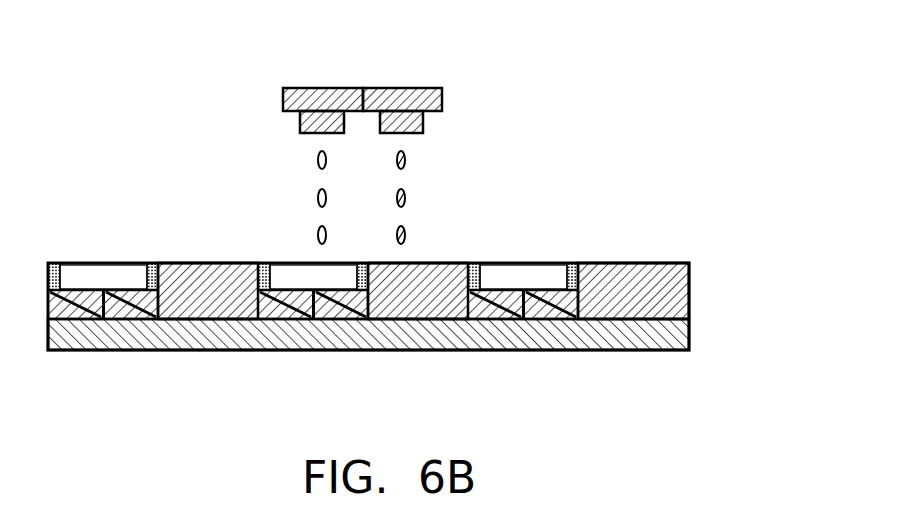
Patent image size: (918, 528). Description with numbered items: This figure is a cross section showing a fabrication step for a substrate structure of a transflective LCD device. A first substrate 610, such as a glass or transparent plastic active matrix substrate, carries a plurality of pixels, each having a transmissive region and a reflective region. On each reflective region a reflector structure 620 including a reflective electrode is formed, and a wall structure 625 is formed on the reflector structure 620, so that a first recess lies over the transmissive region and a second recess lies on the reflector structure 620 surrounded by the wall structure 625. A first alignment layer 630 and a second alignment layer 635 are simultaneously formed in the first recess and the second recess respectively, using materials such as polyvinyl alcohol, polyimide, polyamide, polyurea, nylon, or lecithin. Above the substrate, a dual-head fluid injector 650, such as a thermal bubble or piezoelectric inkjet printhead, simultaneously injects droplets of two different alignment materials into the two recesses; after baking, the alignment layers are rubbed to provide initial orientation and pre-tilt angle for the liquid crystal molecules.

The first substrate 610 is at (689, 333).
The reflector structure 620 is at (132, 308).
The wall structure 625 is at (474, 265).
The first alignment layer 630 is at (208, 270).
The second alignment layer 635 is at (523, 277).
The dual-head fluid injector 650 is at (442, 97).